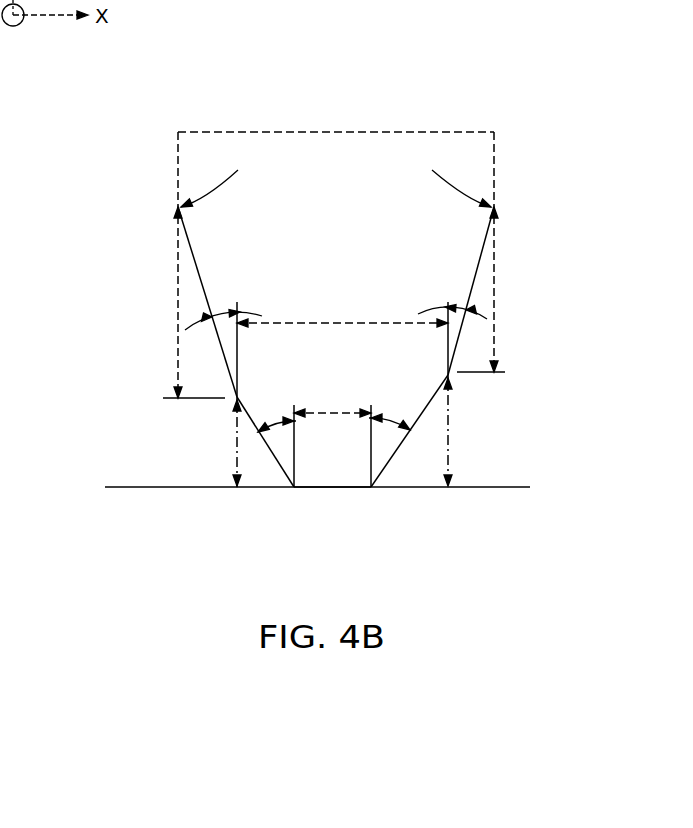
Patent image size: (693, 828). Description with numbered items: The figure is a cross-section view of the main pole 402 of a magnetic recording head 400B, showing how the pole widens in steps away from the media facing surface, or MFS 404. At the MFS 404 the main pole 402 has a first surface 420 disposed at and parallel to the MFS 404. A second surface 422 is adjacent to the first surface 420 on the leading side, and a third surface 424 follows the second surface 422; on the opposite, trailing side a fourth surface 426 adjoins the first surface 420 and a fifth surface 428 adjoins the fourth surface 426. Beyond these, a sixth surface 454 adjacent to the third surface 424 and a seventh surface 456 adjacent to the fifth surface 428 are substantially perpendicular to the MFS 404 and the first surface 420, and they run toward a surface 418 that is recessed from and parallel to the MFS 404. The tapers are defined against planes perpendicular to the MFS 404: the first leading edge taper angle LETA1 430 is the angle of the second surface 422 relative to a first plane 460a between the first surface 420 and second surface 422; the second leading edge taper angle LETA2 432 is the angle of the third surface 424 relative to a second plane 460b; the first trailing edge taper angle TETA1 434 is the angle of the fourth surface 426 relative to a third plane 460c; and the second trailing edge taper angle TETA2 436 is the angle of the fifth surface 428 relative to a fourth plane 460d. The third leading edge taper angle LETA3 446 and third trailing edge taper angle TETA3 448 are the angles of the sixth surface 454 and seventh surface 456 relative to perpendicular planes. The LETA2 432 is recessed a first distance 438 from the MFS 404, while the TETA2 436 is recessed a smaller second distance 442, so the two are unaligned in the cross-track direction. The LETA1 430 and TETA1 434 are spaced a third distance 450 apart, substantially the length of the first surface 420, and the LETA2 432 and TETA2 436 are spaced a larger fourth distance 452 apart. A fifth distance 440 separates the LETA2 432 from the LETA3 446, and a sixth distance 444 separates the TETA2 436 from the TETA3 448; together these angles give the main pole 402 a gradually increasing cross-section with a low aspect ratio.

The magnetic recording head 400B is at (401, 292).
The main pole 402 is at (350, 217).
The MFS 404 is at (470, 487).
The surface 418 is at (358, 132).
The first surface 420 is at (333, 487).
The second surface 422 is at (390, 455).
The third surface 424 is at (477, 277).
The fourth surface 426 is at (264, 488).
The fifth surface 428 is at (212, 323).
The first leading edge taper angle (LETA1) 430 is at (400, 425).
The second leading edge taper angle (LETA2) 432 is at (458, 305).
The first trailing edge taper angle (TETA1) 434 is at (268, 422).
The second trailing edge taper angle (TETA2) 436 is at (222, 312).
The first distance 438 is at (450, 444).
The fifth distance 440 is at (494, 310).
The second distance 442 is at (236, 450).
The sixth distance 444 is at (178, 310).
The third leading edge taper angle (LETA3) 446 is at (424, 172).
The third trailing edge taper angle (TETA3) 448 is at (254, 171).
The third distance 450 is at (333, 412).
The fourth distance 452 is at (343, 323).
The sixth surface 454 is at (494, 157).
The seventh surface 456 is at (178, 162).
The first plane 460a is at (368, 460).
The second plane 460b is at (448, 347).
The third plane 460c is at (293, 447).
The fourth plane 460d is at (233, 348).